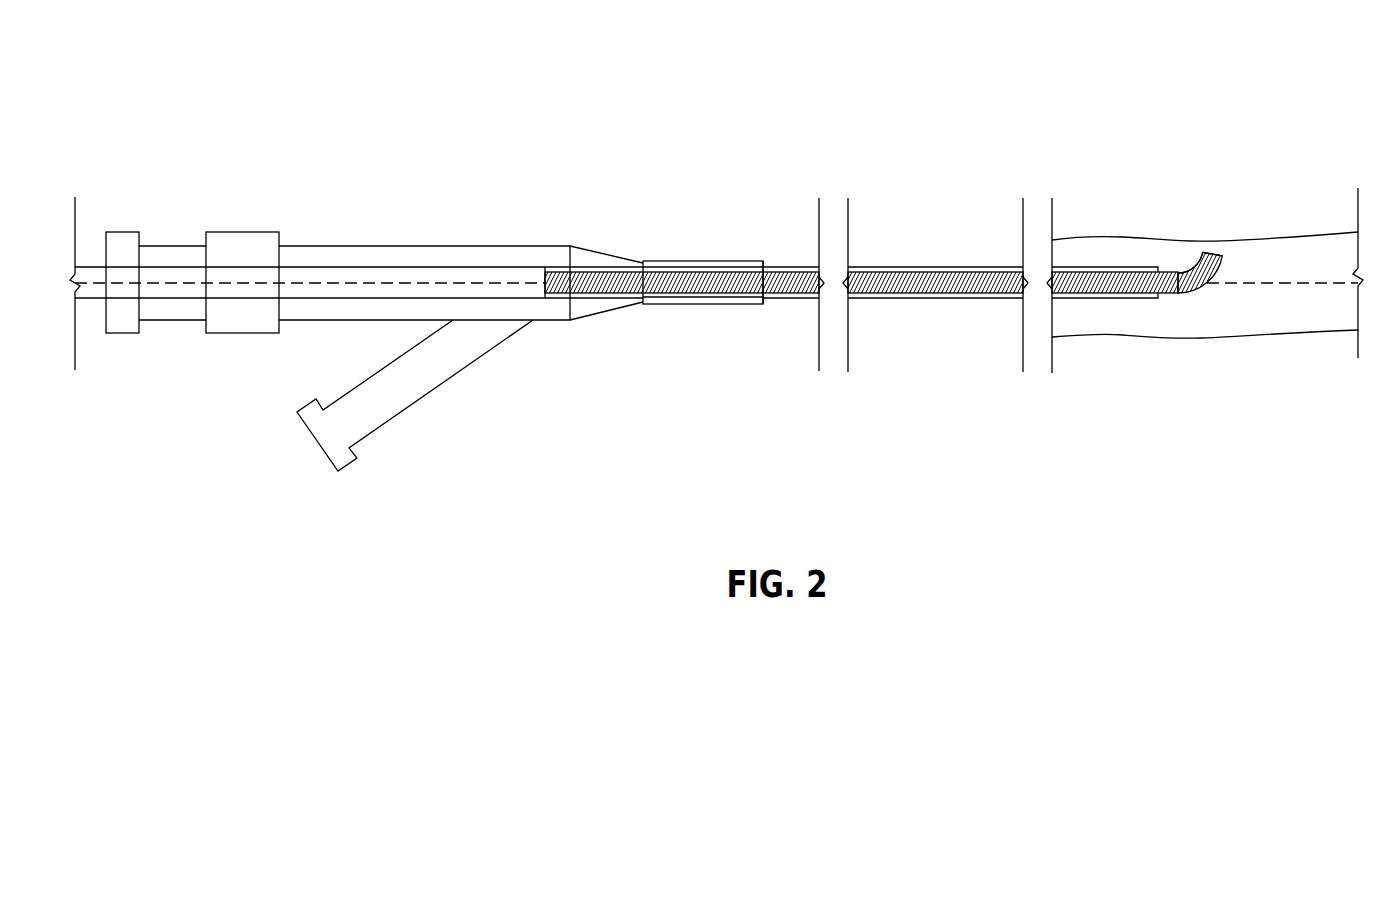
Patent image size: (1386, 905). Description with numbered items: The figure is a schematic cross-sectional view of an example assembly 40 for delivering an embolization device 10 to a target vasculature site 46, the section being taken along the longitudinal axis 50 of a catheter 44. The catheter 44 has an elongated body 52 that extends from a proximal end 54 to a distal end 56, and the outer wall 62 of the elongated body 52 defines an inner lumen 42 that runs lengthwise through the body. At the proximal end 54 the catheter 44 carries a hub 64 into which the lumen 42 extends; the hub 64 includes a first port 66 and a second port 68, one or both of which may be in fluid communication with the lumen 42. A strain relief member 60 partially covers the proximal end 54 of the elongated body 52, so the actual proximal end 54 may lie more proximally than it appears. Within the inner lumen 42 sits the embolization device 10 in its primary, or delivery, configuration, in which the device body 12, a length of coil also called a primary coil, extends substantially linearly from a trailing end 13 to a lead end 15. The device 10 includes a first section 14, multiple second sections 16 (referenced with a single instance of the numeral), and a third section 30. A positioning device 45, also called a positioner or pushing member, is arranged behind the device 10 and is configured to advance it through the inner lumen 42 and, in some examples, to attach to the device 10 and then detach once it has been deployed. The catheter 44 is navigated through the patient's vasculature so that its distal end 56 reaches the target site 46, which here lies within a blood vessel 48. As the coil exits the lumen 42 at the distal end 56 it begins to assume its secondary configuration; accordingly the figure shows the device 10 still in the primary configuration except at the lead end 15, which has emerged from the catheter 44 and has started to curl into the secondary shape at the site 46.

The assembly 40 is at (630, 118).
The catheter 44 is at (466, 245).
The hub 64 is at (317, 242).
The first port 66 is at (105, 232).
The positioning device 45 is at (337, 298).
The trailing end 13 is at (545, 298).
The second port 68 is at (318, 443).
The second sections 16 is at (668, 262).
The strain relief member 60 is at (710, 304).
The proximal end 54 is at (763, 302).
The inner lumen 42 is at (772, 265).
The elongated body 52 is at (923, 262).
The outer wall 62 is at (1013, 265).
The first section 14 is at (912, 297).
The distal end 56 is at (1160, 267).
The third section 30 is at (1088, 299).
The embolization device 10 is at (1195, 294).
The device body 12 is at (1183, 270).
The lead end 15 is at (1217, 257).
The longitudinal axis 50 is at (1258, 285).
The blood vessel 48 is at (1270, 345).
The target vasculature site 46 is at (1240, 337).